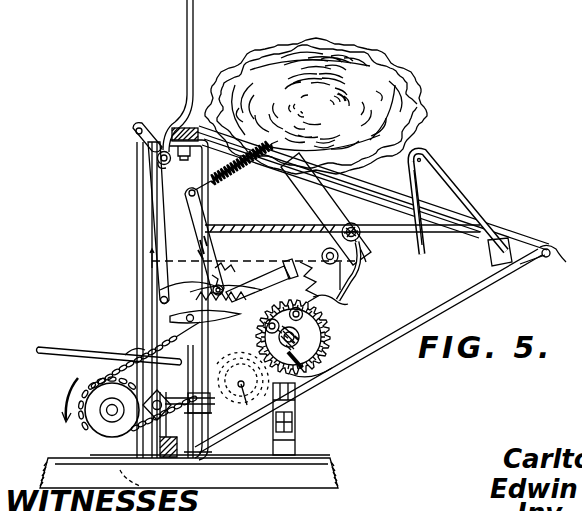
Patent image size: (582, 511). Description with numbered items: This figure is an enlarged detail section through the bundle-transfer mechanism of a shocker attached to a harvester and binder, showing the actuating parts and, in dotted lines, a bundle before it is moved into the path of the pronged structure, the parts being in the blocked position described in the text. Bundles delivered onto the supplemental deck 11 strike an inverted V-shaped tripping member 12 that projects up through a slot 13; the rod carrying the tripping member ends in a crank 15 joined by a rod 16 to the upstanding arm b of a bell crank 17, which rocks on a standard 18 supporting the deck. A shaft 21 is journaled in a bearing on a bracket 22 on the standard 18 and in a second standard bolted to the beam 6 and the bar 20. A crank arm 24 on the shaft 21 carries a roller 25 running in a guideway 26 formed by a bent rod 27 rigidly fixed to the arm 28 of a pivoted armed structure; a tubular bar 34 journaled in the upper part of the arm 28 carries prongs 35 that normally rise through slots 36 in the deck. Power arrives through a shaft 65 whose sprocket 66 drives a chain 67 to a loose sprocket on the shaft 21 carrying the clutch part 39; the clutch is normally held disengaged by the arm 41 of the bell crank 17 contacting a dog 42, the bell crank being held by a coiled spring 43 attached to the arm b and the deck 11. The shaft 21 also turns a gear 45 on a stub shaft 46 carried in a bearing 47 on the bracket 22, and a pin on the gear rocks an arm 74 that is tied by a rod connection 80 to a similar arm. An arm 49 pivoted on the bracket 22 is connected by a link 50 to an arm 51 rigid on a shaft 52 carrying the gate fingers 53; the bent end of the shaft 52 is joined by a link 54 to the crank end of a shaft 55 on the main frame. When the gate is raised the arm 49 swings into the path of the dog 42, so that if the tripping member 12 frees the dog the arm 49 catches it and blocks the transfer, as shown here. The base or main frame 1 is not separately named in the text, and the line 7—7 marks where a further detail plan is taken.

The base 1 is at (323, 460).
The beam 6 is at (197, 456).
The pointer 7 is at (151, 271).
The supplemental deck 11 is at (538, 248).
The tripping member 12 is at (467, 206).
The slot 13 is at (433, 210).
The crank 15 is at (488, 250).
The rod 16 is at (446, 234).
The bell crank 17 is at (208, 250).
The standard 18 is at (202, 163).
The bar 20 is at (189, 120).
The shaft 21 is at (318, 328).
The bracket 22 is at (139, 377).
The crank arm 24 is at (320, 378).
The roller 25 is at (243, 392).
The guideway 26 is at (355, 293).
The rod 27 is at (352, 284).
The arm 28 is at (360, 226).
The tubular bar 34 is at (346, 220).
The prongs 35 is at (288, 184).
The slots 36 is at (322, 165).
The clutch part 39 is at (324, 353).
The arm 41 is at (262, 286).
The dog 42 is at (337, 305).
The coiled spring 43 is at (242, 179).
The gear 45 is at (160, 291).
The stub shaft 46 is at (204, 299).
The bearing 47 is at (236, 334).
The arm 49 is at (170, 312).
The link 50 is at (156, 240).
The arm 51 is at (138, 151).
The shaft 52 is at (157, 160).
The fingers 53 is at (192, 9).
The link 54 is at (139, 205).
The shaft 55 is at (140, 488).
The shaft 65 is at (108, 414).
The sprocket 66 is at (97, 380).
The chain 67 is at (130, 358).
The arm 74 is at (178, 390).
The rod connection 80 is at (54, 350).
The upstanding arm b is at (202, 205).